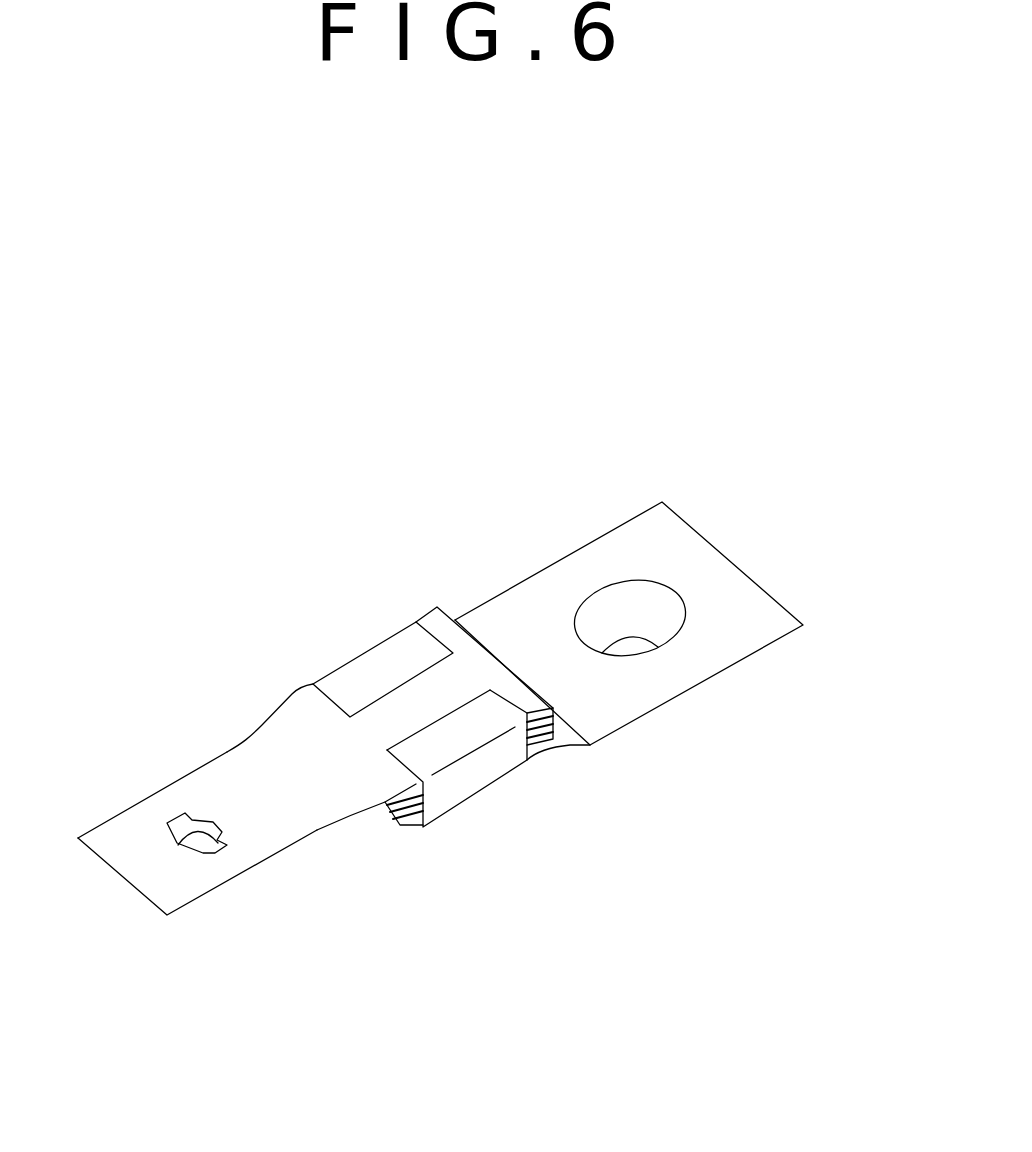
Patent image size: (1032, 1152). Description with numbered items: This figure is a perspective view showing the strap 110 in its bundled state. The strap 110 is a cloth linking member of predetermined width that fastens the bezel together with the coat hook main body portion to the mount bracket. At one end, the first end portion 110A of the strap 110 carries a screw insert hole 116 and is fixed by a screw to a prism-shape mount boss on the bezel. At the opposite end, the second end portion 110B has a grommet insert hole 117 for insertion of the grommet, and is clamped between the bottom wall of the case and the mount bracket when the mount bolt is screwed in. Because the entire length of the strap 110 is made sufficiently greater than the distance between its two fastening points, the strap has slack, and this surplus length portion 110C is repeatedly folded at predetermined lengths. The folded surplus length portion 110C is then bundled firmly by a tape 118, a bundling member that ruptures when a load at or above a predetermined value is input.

The strap 110 is at (487, 697).
The first end portion 110A is at (177, 856).
The second end portion 110B is at (696, 631).
The surplus length portion 110C is at (400, 816).
The screw insert hole 116 is at (215, 853).
The grommet insert hole 117 is at (657, 647).
The tape 118 is at (370, 660).